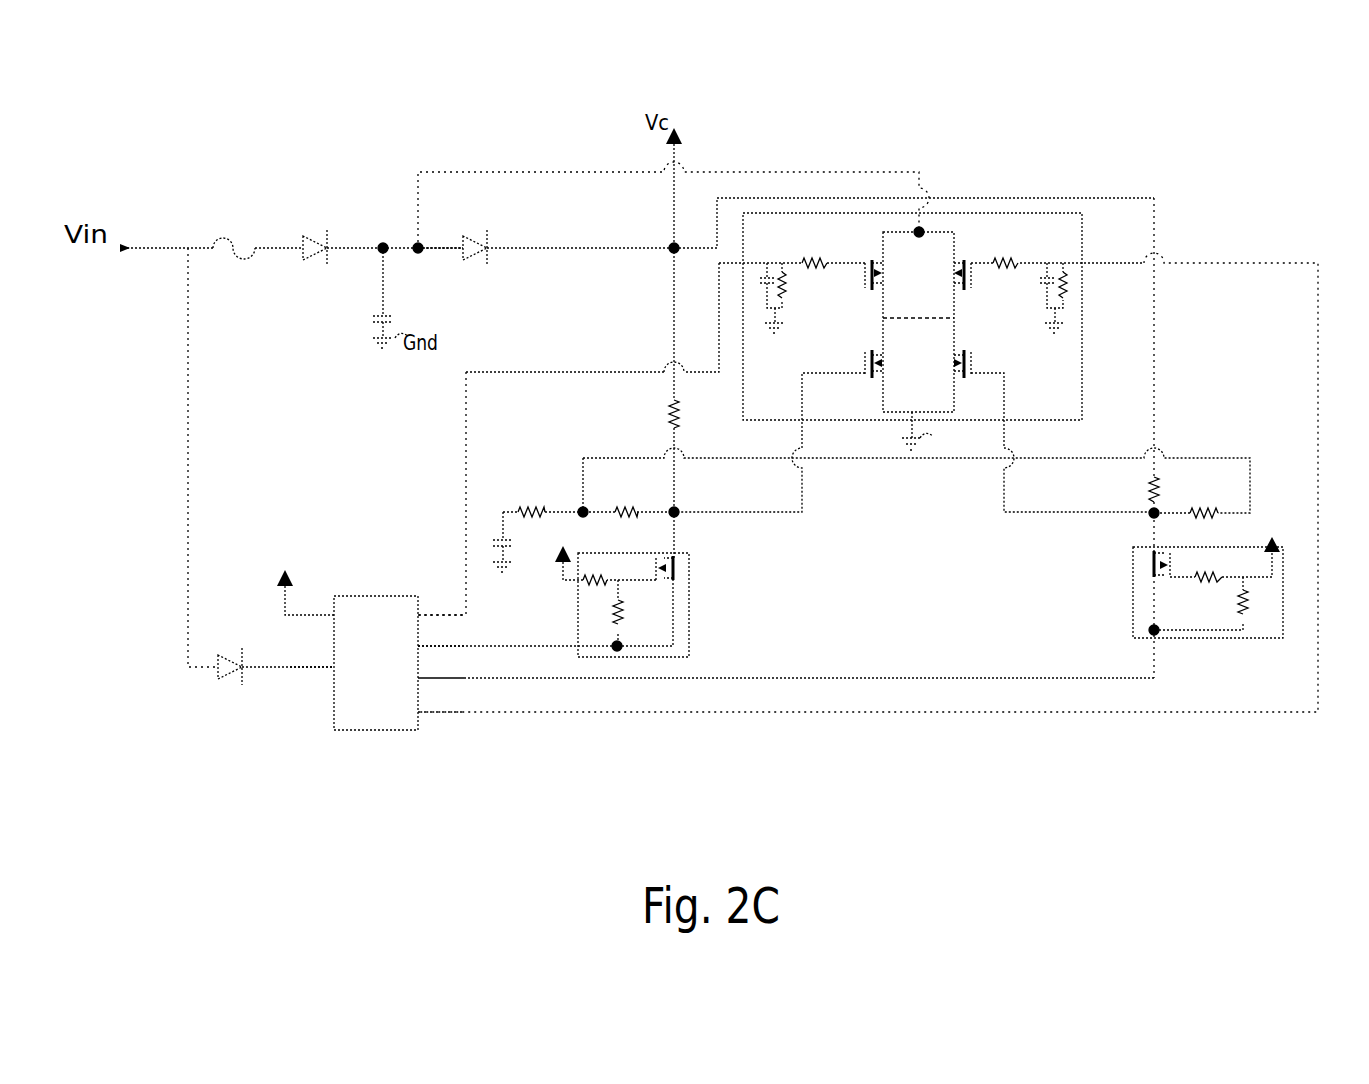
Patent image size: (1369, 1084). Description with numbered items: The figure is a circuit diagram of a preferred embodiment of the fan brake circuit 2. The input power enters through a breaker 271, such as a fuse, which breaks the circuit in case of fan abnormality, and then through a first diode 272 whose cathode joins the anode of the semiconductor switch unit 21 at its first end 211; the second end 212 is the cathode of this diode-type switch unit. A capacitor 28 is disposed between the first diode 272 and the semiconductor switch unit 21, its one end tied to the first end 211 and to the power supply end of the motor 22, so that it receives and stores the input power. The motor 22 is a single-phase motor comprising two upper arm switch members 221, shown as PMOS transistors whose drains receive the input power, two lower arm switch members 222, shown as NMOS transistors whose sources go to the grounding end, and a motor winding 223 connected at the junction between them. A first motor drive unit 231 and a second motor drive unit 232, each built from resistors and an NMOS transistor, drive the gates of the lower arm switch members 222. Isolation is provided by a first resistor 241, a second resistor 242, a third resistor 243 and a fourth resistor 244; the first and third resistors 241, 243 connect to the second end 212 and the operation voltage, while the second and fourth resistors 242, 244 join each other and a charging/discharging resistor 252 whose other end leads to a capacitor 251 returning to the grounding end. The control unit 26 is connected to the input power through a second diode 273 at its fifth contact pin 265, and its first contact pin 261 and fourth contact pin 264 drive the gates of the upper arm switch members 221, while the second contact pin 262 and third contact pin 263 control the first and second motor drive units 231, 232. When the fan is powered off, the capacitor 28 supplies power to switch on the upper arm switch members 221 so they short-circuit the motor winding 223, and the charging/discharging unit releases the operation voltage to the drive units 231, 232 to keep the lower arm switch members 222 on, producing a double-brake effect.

The fan brake circuit 2 is at (1242, 140).
The semiconductor switch unit 21 is at (471, 269).
The first end 211 is at (440, 234).
The second end 212 is at (506, 243).
The motor 22 is at (1072, 212).
The upper arm switch members 221 is at (878, 265).
The lower arm switch members 222 is at (866, 360).
The motor winding 223 is at (912, 318).
The first motor drive unit 231 is at (690, 632).
The second motor drive unit 232 is at (1133, 617).
The first resistor 241 is at (670, 410).
The second resistor 242 is at (622, 508).
The third resistor 243 is at (1148, 488).
The fourth resistor 244 is at (1207, 511).
The capacitor 251 is at (497, 538).
The charging/discharging resistor 252 is at (523, 507).
The control unit 26 is at (375, 596).
The first contact pin 261 is at (442, 604).
The second contact pin 262 is at (442, 637).
The third contact pin 263 is at (442, 669).
The fourth contact pin 264 is at (442, 702).
The fifth contact pin 265 is at (312, 654).
The breaker 271 is at (223, 235).
The first diode 272 is at (316, 233).
The second diode 273 is at (232, 672).
The capacitor 28 is at (375, 316).